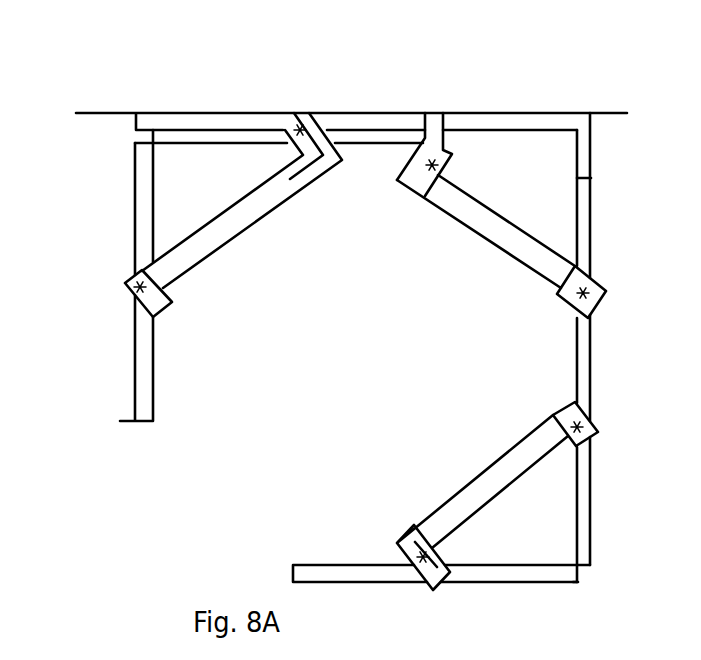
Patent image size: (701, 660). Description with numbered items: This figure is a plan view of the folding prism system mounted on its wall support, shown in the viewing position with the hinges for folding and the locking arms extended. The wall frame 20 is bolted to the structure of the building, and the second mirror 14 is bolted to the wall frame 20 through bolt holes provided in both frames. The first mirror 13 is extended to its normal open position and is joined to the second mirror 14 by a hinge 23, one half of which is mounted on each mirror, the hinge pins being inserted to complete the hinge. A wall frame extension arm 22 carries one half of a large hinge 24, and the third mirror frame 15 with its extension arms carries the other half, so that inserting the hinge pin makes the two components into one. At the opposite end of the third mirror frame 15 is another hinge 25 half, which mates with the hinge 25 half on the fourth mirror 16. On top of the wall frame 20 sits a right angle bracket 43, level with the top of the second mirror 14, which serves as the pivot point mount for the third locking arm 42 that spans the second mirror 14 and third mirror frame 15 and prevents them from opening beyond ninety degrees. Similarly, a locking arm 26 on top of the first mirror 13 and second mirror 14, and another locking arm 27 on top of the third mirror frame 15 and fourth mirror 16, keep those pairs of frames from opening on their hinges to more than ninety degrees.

The first mirror 13 is at (143, 383).
The second mirror 14 is at (373, 135).
The third mirror frame 15 is at (585, 365).
The fourth mirror 16 is at (350, 572).
The wall frame 20 is at (338, 122).
The wall frame extension arm 22 is at (585, 147).
The hinge 23 is at (147, 152).
The large hinge 24 is at (580, 572).
The hinge 25 is at (572, 178).
The locking arm 26 is at (225, 235).
The locking arm 27 is at (453, 512).
The third locking arm 42 is at (493, 233).
The right angle bracket 43 is at (435, 128).